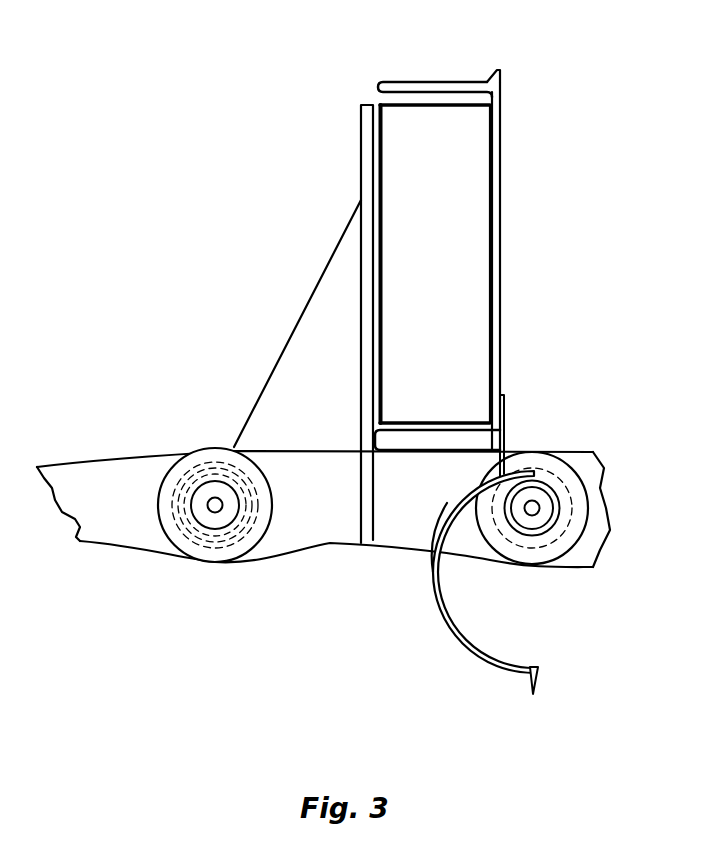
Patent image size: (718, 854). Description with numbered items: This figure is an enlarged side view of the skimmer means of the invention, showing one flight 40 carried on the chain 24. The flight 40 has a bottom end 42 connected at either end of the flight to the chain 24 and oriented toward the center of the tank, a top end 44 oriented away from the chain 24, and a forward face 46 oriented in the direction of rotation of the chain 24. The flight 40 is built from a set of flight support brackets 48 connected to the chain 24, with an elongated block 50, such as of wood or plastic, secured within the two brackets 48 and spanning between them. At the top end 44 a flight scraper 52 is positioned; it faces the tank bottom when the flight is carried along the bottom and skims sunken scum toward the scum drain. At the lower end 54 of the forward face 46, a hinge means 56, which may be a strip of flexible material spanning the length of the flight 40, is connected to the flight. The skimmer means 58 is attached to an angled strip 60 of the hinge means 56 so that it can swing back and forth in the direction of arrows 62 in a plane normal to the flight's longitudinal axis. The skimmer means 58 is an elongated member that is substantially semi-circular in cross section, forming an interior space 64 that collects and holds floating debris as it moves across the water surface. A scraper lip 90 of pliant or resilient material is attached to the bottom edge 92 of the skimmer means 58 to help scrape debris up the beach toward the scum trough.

The chain 24 is at (122, 490).
The flight 40 is at (448, 382).
The bottom end 42 is at (418, 428).
The top end 44 is at (398, 82).
The forward face 46 is at (500, 293).
The flight support brackets 48 is at (343, 217).
The elongated block 50 is at (460, 207).
The flight scraper 52 is at (501, 80).
The lower end 54 is at (506, 388).
The hinge means 56 is at (510, 432).
The skimmer means 58 is at (455, 642).
The strip 60 is at (448, 509).
The arrows 62 is at (423, 612).
The interior space 64 is at (503, 635).
The scraper lip 90 is at (545, 685).
The bottom edge 92 is at (528, 673).